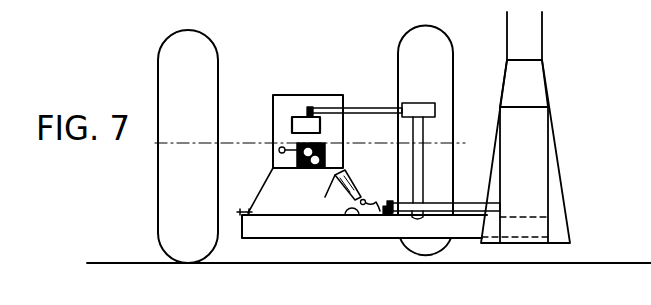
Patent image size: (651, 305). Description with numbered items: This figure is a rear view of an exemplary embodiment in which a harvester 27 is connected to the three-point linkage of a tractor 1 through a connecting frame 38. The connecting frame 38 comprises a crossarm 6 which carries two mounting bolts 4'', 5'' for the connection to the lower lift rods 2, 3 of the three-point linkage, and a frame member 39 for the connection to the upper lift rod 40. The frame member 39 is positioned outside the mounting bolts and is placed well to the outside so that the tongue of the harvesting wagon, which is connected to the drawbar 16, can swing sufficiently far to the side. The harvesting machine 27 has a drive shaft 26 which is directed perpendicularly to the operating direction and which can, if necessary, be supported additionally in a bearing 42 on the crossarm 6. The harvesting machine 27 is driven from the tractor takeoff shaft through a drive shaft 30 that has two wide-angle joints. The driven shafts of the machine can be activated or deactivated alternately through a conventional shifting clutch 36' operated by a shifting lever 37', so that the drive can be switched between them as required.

The tractor 1 is at (282, 98).
The lower lift rod 2 is at (257, 185).
The lower lift rod 3 is at (355, 176).
The mounting bolt 4'' is at (235, 201).
The mounting bolt 5'' is at (323, 240).
The crossarm 6 is at (342, 238).
The drawbar 16 is at (292, 122).
The drive shaft 26 is at (467, 202).
The harvester 27 is at (562, 193).
The drive shaft 30 is at (337, 190).
The shifting clutch 36' is at (297, 176).
The shifting lever 37' is at (258, 159).
The connecting frame 38 is at (259, 246).
The frame member 39 is at (423, 133).
The upper lift rod 40 is at (367, 107).
The bearing 42 is at (382, 213).